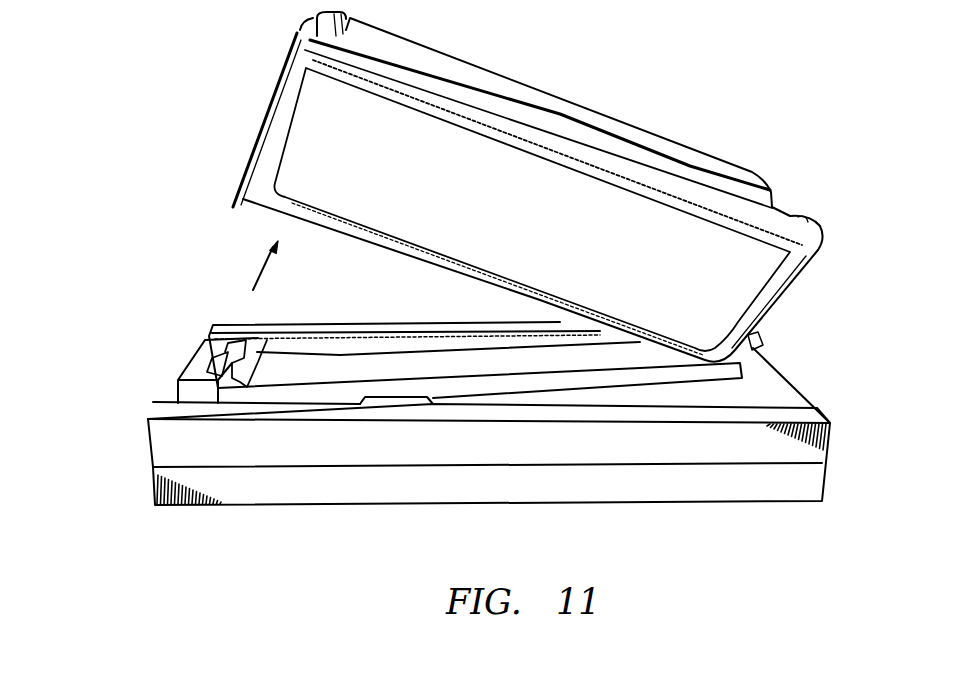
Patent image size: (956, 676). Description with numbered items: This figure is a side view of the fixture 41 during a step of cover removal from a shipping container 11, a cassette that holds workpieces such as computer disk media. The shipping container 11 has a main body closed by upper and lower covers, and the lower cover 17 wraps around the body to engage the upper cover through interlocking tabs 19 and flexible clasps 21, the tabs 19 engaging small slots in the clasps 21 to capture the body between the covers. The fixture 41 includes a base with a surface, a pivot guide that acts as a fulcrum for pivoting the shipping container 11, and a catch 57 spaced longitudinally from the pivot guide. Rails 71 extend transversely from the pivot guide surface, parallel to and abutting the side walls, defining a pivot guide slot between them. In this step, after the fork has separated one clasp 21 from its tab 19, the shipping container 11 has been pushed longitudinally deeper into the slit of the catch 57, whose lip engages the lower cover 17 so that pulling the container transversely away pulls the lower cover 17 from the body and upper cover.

The shipping container 11 is at (313, 137).
The lower cover 17 is at (337, 368).
The interlocking tabs 19 is at (213, 347).
The flexible clasps 21 is at (236, 206).
The fixture 41 is at (150, 476).
The catch 57 is at (203, 363).
The rails 71 is at (399, 398).